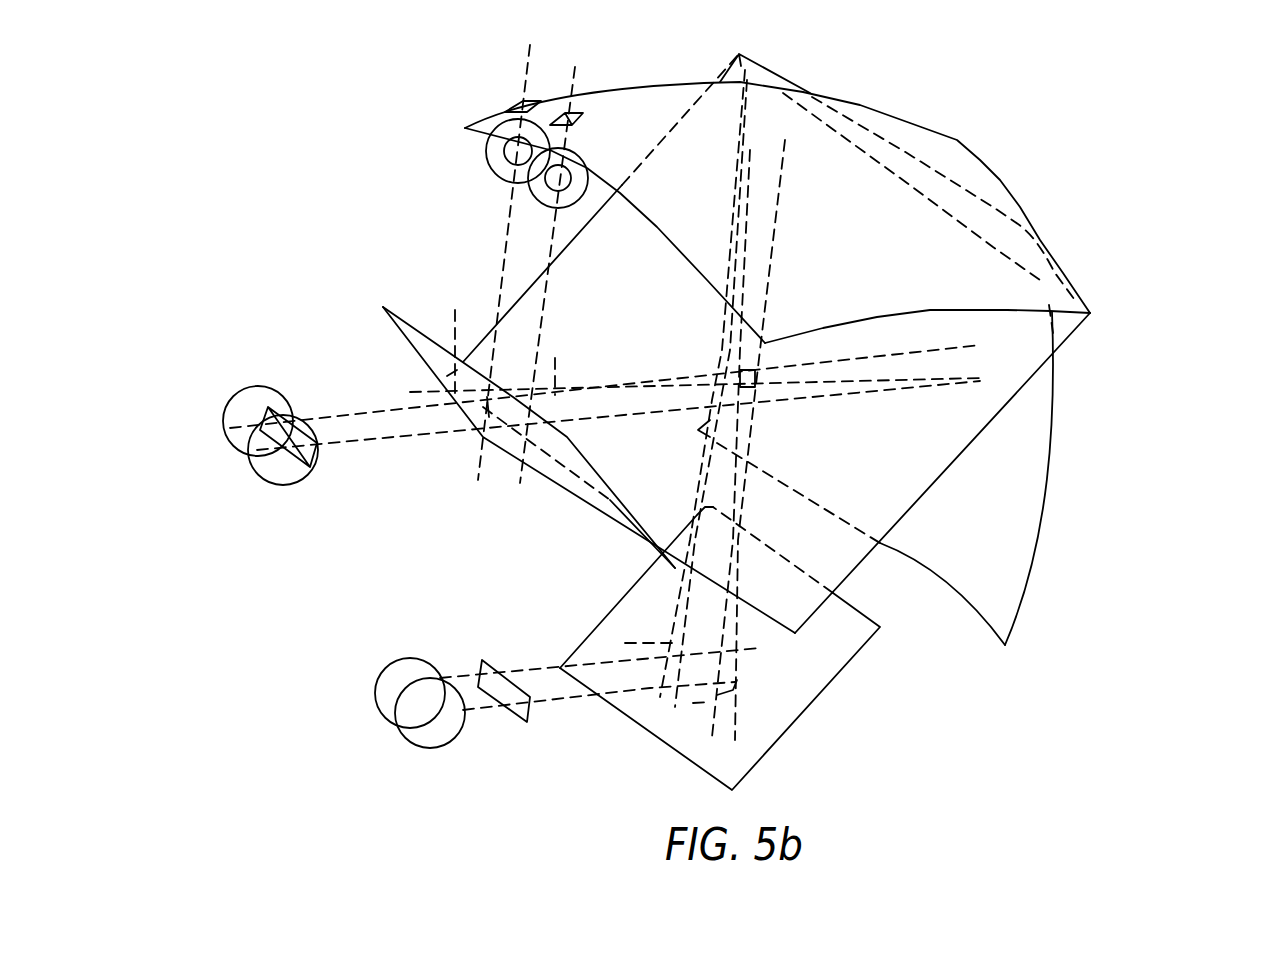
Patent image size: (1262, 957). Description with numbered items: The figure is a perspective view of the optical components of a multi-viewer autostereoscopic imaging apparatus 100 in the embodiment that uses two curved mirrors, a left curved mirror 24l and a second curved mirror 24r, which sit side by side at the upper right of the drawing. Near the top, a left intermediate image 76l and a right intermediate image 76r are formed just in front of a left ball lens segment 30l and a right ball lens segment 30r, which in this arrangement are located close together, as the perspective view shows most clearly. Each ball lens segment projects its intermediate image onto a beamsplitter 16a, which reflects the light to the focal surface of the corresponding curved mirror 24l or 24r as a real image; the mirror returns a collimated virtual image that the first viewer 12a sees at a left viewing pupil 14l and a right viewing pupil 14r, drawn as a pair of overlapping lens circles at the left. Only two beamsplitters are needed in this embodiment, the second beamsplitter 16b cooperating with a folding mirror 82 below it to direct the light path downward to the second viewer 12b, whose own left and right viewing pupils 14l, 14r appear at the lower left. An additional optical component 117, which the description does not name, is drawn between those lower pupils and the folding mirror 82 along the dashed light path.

The left curved mirror 24l is at (953, 142).
The curved mirror 24r is at (1040, 532).
The second beamsplitter 16b is at (1066, 338).
The beamsplitter 16a is at (583, 508).
The folding mirror 82 is at (807, 707).
The right ball lens segment 30r is at (486, 152).
The left ball lens segment 30l is at (533, 203).
The right intermediate image 76r is at (507, 108).
The left intermediate image 76l is at (587, 120).
The left viewing pupil 14l is at (236, 388).
The right viewing pupil 14r is at (272, 483).
The viewer 12a is at (204, 457).
The viewer 12b is at (350, 722).
The prism 117 is at (500, 670).
The multi-viewer autostereoscopic imaging apparatus 100 is at (1093, 690).